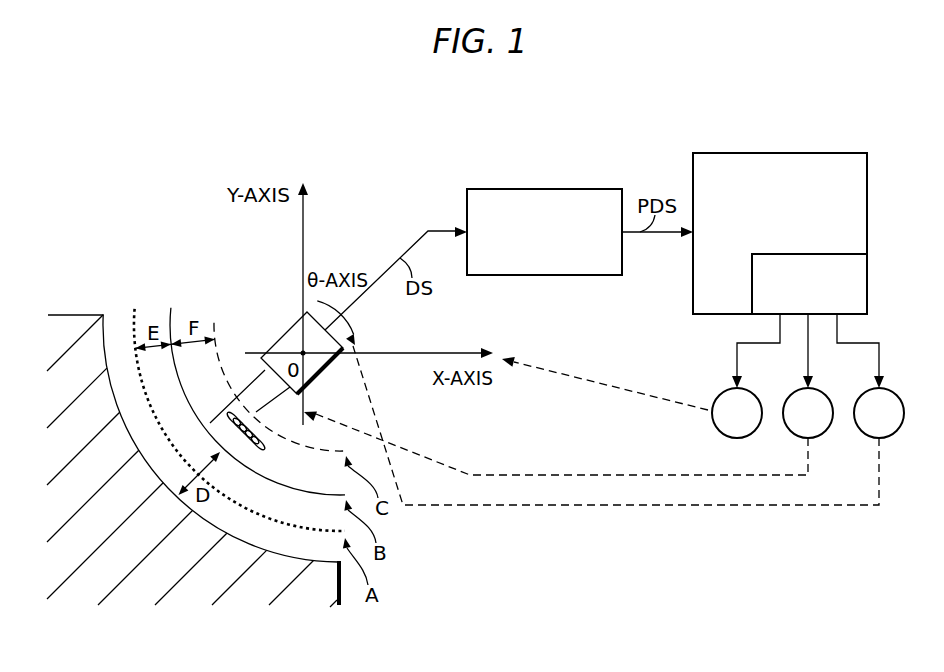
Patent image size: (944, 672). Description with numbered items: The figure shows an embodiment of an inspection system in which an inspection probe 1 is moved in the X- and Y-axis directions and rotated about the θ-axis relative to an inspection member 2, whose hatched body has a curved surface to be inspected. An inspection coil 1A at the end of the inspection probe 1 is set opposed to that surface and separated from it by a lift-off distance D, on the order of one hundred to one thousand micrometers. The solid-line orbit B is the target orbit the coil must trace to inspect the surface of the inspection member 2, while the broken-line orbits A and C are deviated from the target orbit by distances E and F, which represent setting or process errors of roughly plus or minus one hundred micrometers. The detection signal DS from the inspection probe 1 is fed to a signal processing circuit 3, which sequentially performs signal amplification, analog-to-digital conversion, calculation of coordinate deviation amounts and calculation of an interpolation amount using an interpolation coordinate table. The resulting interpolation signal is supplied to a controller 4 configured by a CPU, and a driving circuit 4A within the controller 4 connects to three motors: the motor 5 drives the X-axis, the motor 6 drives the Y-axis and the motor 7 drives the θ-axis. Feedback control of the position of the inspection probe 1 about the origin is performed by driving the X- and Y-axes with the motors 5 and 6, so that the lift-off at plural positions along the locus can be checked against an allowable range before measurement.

The inspection probe 1 is at (287, 335).
The inspection coil 1A is at (252, 440).
The inspection member 2 is at (104, 315).
The signal processing circuit 3 is at (545, 189).
The controller 4 is at (778, 153).
The driving circuit 4A is at (752, 285).
The motor 5 is at (715, 393).
The motor 6 is at (786, 393).
The motor 7 is at (858, 393).